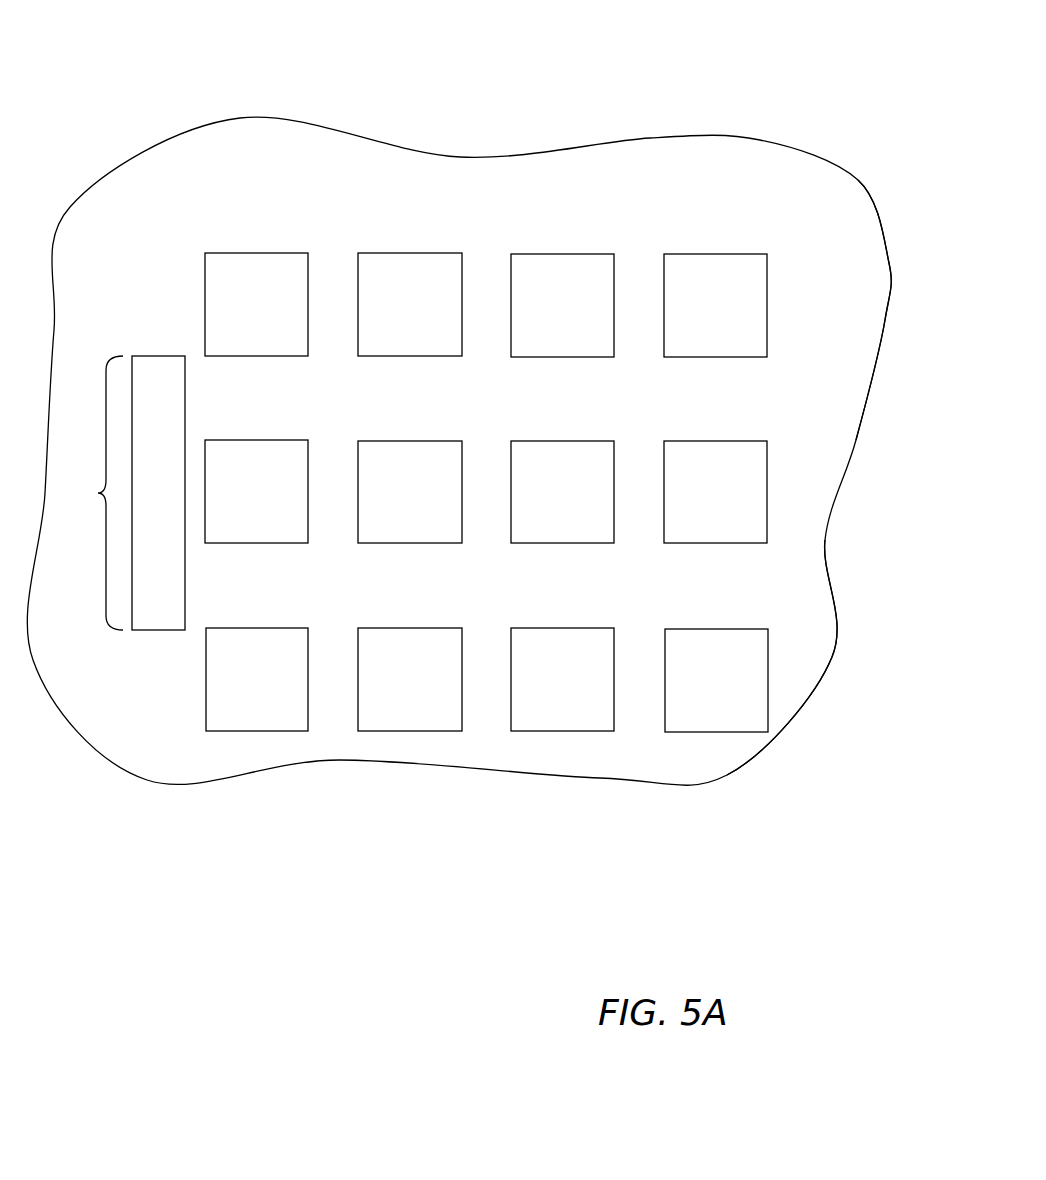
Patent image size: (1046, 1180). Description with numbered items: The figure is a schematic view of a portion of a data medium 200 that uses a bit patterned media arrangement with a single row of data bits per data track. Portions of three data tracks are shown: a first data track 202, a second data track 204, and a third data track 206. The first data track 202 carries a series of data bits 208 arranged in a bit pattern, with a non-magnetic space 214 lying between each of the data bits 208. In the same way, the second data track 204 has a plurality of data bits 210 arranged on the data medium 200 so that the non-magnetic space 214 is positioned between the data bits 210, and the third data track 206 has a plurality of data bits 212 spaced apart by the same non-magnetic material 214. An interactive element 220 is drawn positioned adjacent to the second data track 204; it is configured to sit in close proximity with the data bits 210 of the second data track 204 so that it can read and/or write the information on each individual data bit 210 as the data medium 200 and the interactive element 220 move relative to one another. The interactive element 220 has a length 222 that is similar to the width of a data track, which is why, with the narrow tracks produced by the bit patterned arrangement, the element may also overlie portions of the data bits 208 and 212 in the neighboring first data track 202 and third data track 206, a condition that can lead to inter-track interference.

The data medium 200 is at (328, 185).
The first data track 202 is at (814, 294).
The second data track 204 is at (852, 380).
The third data track 206 is at (805, 669).
The data bits 208 is at (245, 290).
The data bits 210 is at (278, 460).
The data bits 212 is at (287, 648).
The non-magnetic space 214 is at (482, 282).
The interactive element 220 is at (158, 393).
The length 222 is at (85, 493).